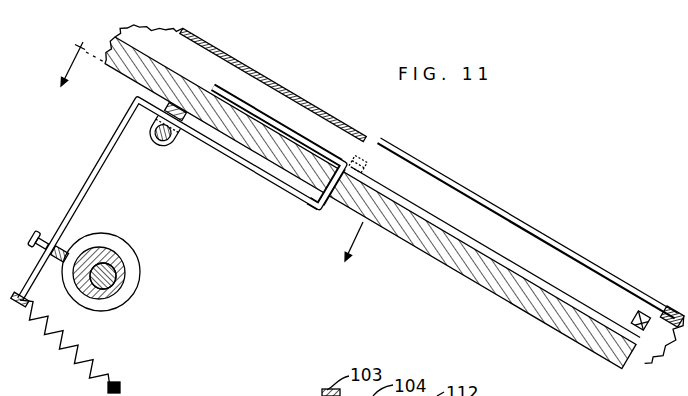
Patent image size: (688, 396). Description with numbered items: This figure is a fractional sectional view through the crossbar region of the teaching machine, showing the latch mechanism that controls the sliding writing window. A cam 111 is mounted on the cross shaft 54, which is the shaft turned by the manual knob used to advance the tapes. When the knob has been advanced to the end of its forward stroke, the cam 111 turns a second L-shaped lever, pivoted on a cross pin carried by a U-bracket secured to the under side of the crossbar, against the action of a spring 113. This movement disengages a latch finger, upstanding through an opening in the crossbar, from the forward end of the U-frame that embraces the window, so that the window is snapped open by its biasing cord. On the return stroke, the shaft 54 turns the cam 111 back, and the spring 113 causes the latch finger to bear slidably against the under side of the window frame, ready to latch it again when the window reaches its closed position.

The cross shaft 54 is at (107, 284).
The cam 111 is at (133, 292).
The spring 113 is at (62, 337).